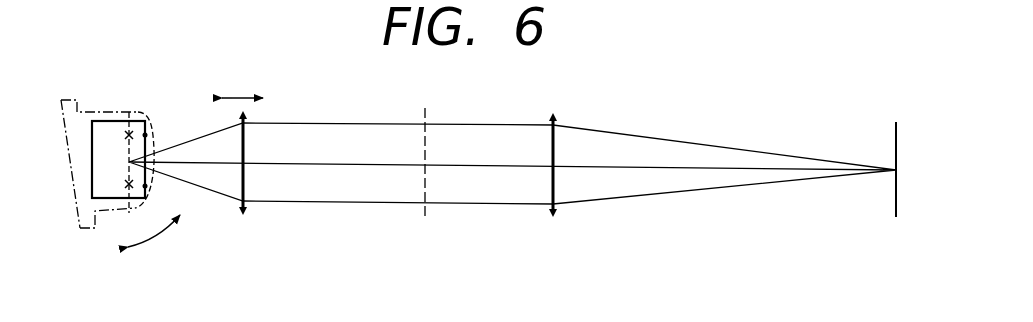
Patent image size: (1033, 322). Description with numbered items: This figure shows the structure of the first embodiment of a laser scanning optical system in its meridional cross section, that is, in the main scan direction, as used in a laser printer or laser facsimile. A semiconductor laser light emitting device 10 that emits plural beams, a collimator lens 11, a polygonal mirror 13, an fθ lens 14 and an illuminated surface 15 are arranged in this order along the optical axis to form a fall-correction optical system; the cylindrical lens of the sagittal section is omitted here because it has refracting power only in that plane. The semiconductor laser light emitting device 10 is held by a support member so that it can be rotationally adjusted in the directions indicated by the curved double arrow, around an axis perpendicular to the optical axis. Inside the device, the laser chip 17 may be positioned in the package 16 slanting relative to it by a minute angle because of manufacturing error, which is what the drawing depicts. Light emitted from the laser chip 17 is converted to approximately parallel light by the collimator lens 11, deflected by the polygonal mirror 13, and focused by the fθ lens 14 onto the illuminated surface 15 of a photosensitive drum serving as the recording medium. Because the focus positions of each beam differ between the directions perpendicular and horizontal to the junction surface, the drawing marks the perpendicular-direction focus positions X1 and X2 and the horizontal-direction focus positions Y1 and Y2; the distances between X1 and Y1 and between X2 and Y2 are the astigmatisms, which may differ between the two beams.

The semiconductor laser light emitting device 10 is at (77, 216).
The collimator lens 11 is at (246, 150).
The polygonal mirror 13 is at (426, 140).
The fθ lens 14 is at (555, 134).
The illuminated surface 15 is at (895, 142).
The package 16 is at (115, 111).
The laser chip 17 is at (80, 112).
The focus position X1 is at (147, 135).
The focus position X2 is at (148, 187).
The focus position Y1 is at (132, 134).
The focus position Y2 is at (127, 186).